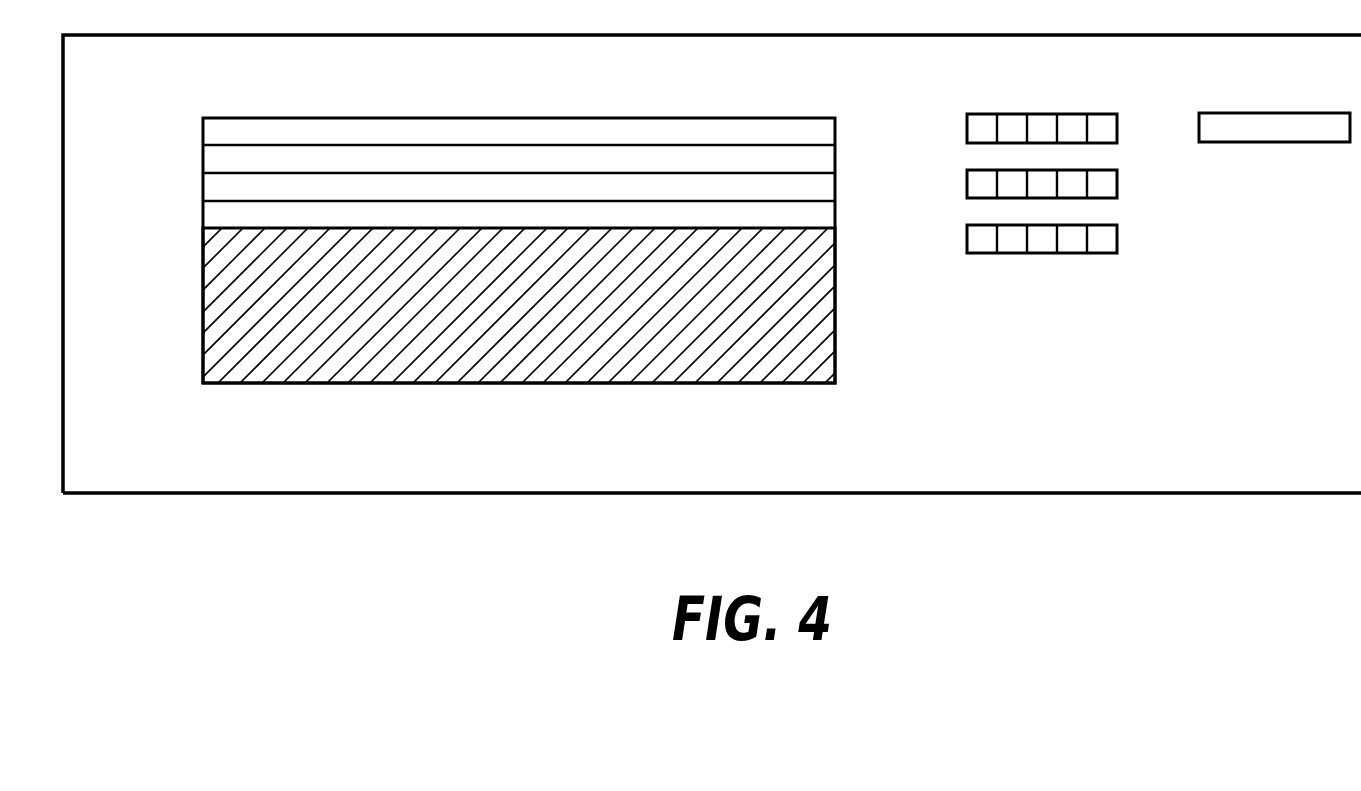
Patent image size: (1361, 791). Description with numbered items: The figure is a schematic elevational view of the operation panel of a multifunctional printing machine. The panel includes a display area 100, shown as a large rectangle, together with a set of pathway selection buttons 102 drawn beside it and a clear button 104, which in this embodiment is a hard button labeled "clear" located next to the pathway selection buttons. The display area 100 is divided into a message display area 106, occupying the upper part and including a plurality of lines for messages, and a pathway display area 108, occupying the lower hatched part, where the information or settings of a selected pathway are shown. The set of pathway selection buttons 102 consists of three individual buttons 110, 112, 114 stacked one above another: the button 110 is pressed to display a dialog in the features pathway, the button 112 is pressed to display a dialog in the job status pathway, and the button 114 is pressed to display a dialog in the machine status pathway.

The display area 100 is at (876, 332).
The set of pathway selection buttons 102 is at (1044, 178).
The clear button 104 is at (1253, 112).
The message display area 106 is at (188, 119).
The pathway display area 108 is at (188, 228).
The button 110 is at (992, 114).
The button 112 is at (967, 183).
The button 114 is at (990, 246).